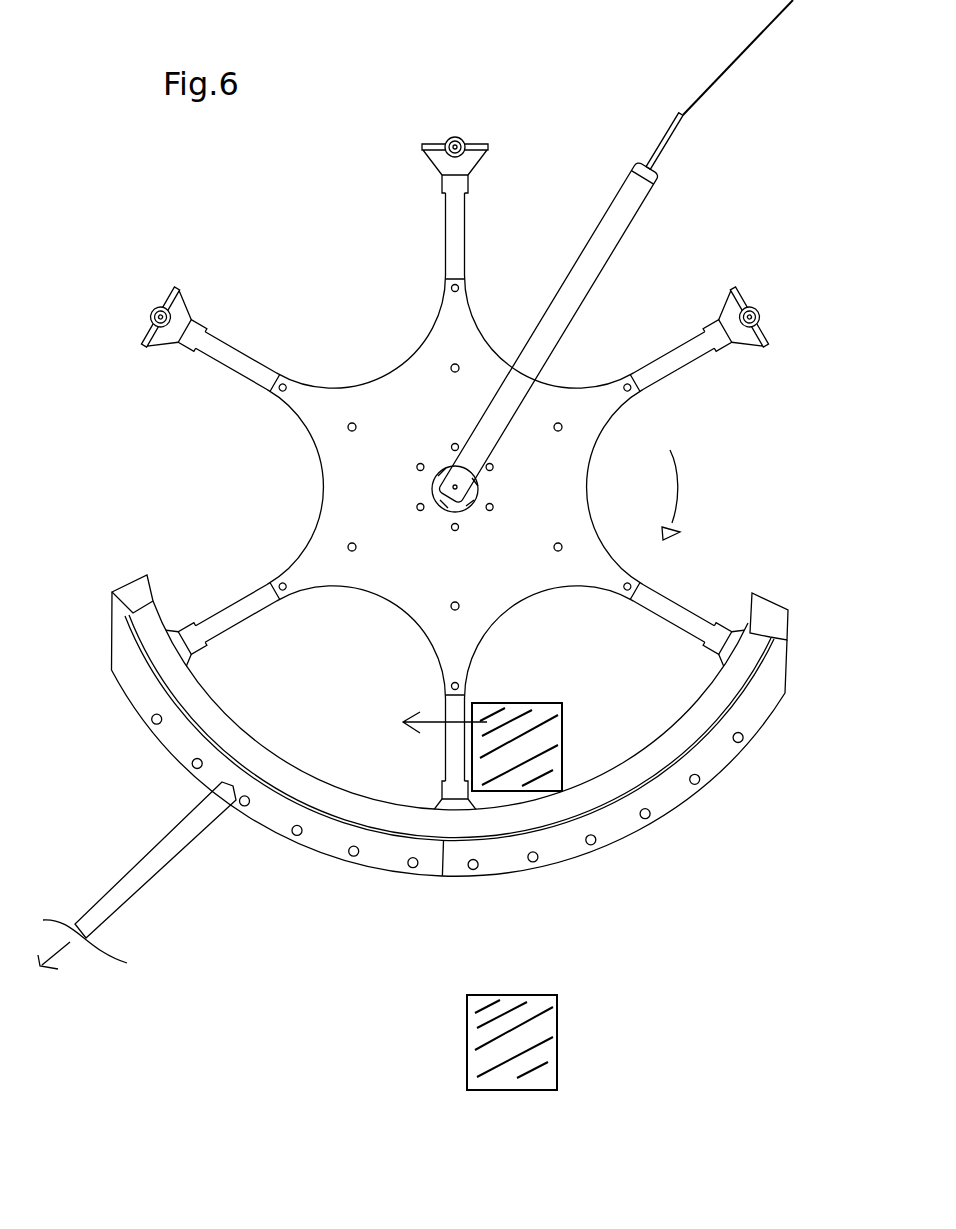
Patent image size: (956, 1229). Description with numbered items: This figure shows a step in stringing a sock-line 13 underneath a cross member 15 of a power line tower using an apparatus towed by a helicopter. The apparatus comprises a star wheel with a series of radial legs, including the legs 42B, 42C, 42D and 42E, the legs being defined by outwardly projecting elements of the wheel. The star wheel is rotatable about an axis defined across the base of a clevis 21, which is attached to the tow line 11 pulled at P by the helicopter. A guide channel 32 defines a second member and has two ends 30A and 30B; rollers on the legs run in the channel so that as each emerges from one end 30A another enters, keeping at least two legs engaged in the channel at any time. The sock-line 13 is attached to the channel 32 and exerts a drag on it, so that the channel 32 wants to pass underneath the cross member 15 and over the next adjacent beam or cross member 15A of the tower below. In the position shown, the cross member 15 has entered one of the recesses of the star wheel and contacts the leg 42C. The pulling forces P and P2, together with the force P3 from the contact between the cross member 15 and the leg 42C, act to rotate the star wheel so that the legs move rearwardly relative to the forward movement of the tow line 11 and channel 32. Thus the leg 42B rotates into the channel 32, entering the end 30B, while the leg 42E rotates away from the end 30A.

The leg 42B is at (690, 603).
The leg 42C is at (448, 760).
The leg 42D is at (232, 596).
The leg 42E is at (230, 345).
The end of channel 30A is at (140, 578).
The end of channel 30B is at (777, 607).
The channel 32 is at (713, 693).
The sock-line 13 is at (160, 875).
The cross member 15 is at (537, 713).
The next adjacent cross member 15A is at (545, 1027).
The tow line 11 is at (673, 135).
The clevis 21 is at (605, 233).
The pulling force P is at (768, 35).
The pulling force P2 is at (60, 953).
The force P3 is at (423, 718).